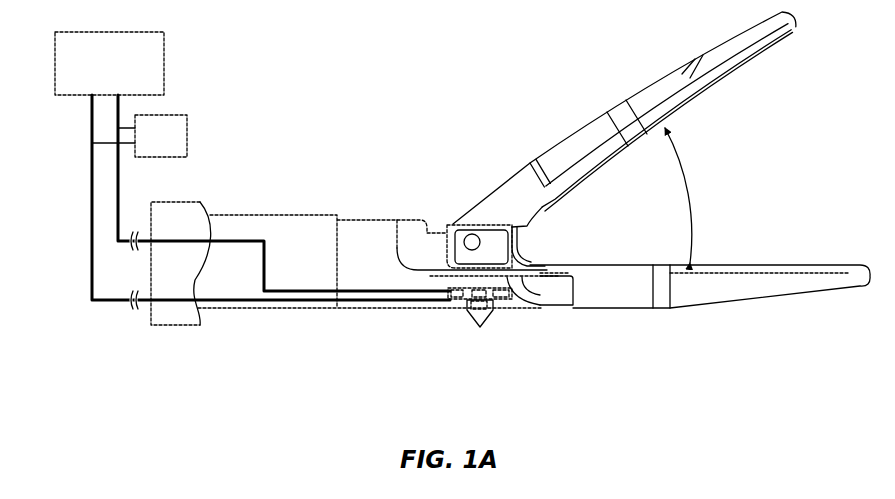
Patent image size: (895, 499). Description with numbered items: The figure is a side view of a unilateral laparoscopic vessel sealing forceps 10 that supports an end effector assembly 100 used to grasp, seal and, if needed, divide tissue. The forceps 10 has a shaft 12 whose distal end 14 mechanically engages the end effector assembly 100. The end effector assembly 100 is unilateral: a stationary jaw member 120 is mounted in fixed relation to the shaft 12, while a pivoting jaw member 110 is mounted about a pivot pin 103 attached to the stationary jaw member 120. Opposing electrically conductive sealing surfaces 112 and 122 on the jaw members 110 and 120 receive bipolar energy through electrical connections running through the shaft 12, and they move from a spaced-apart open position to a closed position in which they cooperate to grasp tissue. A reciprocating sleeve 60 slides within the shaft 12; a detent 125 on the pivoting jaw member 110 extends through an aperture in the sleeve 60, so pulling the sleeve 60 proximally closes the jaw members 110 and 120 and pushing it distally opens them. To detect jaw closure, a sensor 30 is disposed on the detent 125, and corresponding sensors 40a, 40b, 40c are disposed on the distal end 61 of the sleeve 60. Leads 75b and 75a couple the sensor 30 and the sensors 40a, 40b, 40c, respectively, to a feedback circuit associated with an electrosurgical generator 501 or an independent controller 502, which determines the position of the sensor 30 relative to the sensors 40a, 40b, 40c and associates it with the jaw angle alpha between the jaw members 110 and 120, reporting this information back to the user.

The unilateral laparoscopic vessel sealing forceps 10 is at (405, 46).
The shaft 12 is at (291, 215).
The distal end 14 is at (320, 310).
The sensor 30 is at (470, 312).
The sensor 40a is at (453, 301).
The sensor 40b is at (488, 301).
The sensor 40c is at (502, 300).
The reciprocating sleeve 60 is at (357, 225).
The distal end 61 is at (515, 296).
The lead 75a is at (120, 192).
The lead 75b is at (92, 192).
The end effector assembly 100 is at (786, 147).
The pivot pin 103 is at (471, 234).
The pivoting jaw member 110 is at (662, 62).
The sealing surface 112 is at (720, 82).
The stationary jaw member 120 is at (774, 314).
The sealing surface 122 is at (780, 264).
The detent 125 is at (478, 322).
The electrosurgical generator 501 is at (164, 62).
The independent controller 502 is at (188, 135).